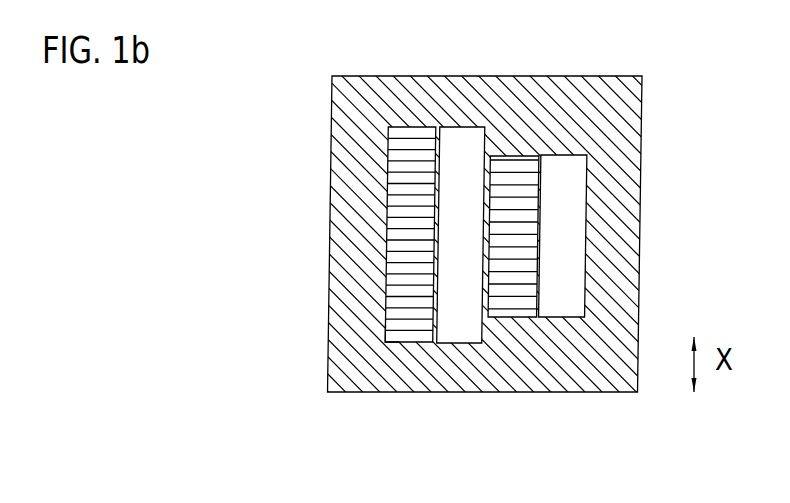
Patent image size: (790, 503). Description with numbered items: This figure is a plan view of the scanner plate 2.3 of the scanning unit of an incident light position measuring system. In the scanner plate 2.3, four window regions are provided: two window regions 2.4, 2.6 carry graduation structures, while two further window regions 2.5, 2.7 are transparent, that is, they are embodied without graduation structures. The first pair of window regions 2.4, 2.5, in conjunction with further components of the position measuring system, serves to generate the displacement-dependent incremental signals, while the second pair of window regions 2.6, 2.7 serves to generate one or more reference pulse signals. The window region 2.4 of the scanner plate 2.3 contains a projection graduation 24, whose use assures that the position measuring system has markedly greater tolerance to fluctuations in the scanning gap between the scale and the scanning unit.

The scanner plate 2.3 is at (397, 367).
The projection graduation 24 is at (400, 287).
The window region 2.4 is at (382, 329).
The window region 2.5 is at (458, 320).
The window region 2.6 is at (514, 320).
The window region 2.7 is at (575, 232).